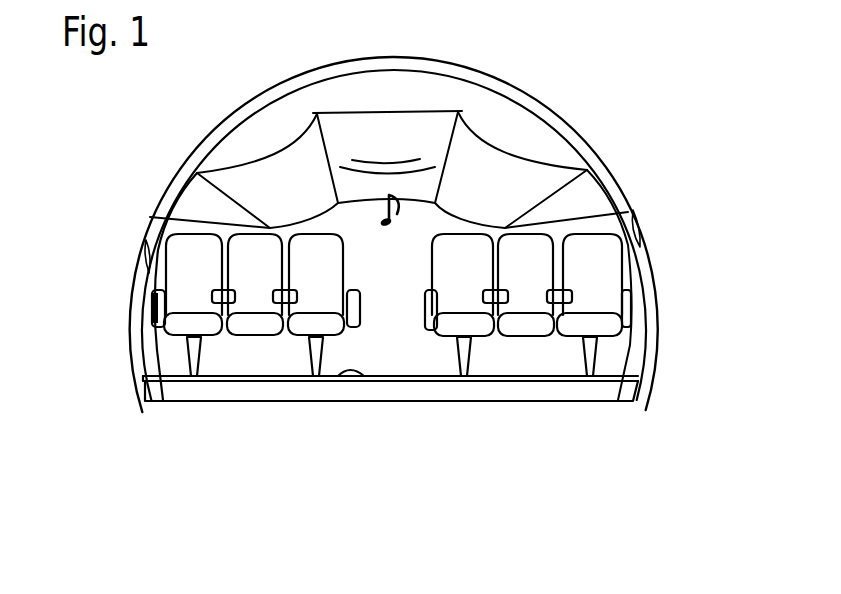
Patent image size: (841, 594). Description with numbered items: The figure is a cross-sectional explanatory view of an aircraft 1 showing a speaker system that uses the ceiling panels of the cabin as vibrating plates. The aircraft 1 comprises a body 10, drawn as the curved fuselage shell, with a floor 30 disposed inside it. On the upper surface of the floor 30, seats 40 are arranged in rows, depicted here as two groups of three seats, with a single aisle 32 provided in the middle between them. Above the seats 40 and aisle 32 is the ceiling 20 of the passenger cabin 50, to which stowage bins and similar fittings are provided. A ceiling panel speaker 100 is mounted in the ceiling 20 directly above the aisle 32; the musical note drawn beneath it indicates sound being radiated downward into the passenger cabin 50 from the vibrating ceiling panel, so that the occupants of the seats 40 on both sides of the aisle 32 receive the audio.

The aircraft 1 is at (690, 110).
The body 10 is at (644, 347).
The ceiling 20 is at (486, 182).
The floor 30 is at (380, 390).
The aisle 32 is at (342, 374).
The seats 40 is at (180, 330).
The passenger cabin 50 is at (397, 318).
The ceiling panel speaker 100 is at (366, 122).